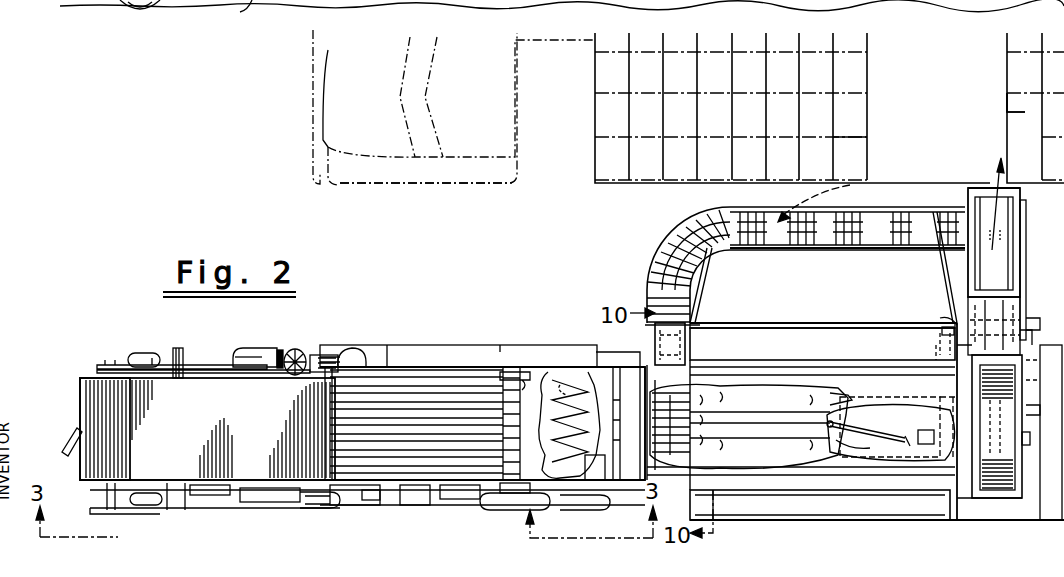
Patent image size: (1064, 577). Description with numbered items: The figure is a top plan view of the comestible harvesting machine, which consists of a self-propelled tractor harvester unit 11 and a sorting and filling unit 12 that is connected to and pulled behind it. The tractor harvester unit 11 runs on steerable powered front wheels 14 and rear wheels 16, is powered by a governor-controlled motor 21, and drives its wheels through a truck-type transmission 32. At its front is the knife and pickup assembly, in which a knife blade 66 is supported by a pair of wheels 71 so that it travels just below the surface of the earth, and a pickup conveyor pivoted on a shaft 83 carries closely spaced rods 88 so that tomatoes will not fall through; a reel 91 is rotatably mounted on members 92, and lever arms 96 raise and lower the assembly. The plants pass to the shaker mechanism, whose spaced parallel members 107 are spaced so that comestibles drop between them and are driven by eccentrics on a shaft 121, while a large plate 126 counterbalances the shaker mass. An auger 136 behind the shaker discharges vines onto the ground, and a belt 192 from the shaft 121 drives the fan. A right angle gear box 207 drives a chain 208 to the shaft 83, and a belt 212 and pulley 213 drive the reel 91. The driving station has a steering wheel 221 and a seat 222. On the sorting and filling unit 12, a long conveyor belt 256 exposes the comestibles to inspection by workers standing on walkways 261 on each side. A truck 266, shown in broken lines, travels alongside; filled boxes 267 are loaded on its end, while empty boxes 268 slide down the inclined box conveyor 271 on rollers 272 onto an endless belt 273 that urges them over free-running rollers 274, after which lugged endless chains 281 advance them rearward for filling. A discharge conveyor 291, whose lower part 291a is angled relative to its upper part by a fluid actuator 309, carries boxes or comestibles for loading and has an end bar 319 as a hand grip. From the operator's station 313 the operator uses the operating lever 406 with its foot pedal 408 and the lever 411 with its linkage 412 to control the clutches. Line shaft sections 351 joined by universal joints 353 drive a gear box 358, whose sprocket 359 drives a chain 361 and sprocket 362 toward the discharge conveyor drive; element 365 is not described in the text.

The tractor harvester unit 11 is at (385, 335).
The sorting and filling unit 12 is at (782, 312).
The front wheels 14 is at (250, 0).
The rear wheels 16 is at (573, 505).
The motor 21 is at (424, 3).
The transmission 32 is at (311, 346).
The knife blade 66 is at (85, 432).
The wheels 71 is at (138, 353).
The shaft 83 is at (330, 512).
The rods 88 is at (290, 445).
The reel 91 is at (80, 470).
The members 92 is at (151, 512).
The lever arms 96 is at (206, 490).
The shaker members 107 is at (435, 412).
The shaft 121 is at (528, 372).
The plate 126 is at (600, 476).
The auger 136 is at (566, 451).
The belt 192 is at (572, 505).
The right angle gear box 207 is at (418, 505).
The chain 208 is at (340, 508).
The belt 212 is at (228, 512).
The pulley 213 is at (94, 512).
The steering wheel 221 is at (284, 349).
The seat 222 is at (369, 328).
The conveyor belt 256 is at (872, 409).
The walkways 261 is at (807, 352).
The truck 266 is at (498, 185).
The filled boxes 267 is at (1025, 95).
The empty boxes 268 is at (815, 143).
The box conveyor 271 is at (762, 248).
The rollers 272 is at (838, 226).
The endless belt 273 is at (655, 346).
The free-running rollers 274 is at (690, 398).
The endless chains 281 is at (757, 432).
The discharge conveyor 291 is at (1026, 248).
The conveyor part 291a is at (1015, 426).
The fluid actuator 309 is at (955, 313).
The operator's station 313 is at (1050, 322).
The end bar 319 is at (1010, 188).
The line shaft sections 351 is at (873, 430).
The universal joints 353 is at (895, 440).
The gear box 358 is at (875, 437).
The sprocket 359 is at (944, 417).
The chain 361 is at (932, 348).
The sprocket 362 is at (940, 338).
The pivot block 365 is at (940, 316).
The operating lever 406 is at (1022, 476).
The foot pedal 408 is at (1030, 440).
The lever 411 is at (1022, 330).
The linkage 412 is at (1042, 388).